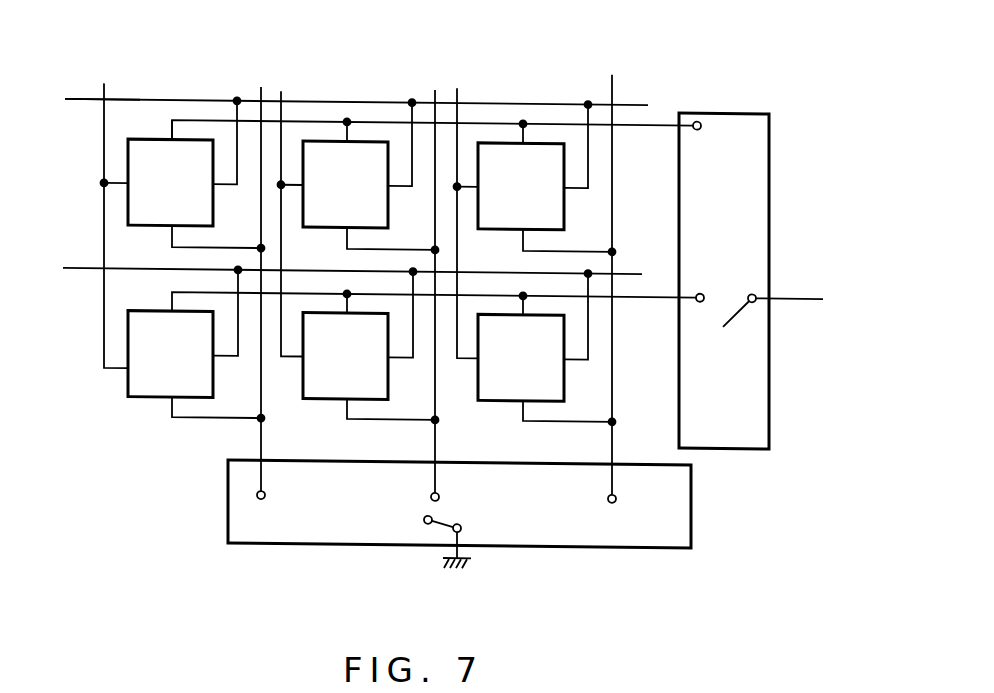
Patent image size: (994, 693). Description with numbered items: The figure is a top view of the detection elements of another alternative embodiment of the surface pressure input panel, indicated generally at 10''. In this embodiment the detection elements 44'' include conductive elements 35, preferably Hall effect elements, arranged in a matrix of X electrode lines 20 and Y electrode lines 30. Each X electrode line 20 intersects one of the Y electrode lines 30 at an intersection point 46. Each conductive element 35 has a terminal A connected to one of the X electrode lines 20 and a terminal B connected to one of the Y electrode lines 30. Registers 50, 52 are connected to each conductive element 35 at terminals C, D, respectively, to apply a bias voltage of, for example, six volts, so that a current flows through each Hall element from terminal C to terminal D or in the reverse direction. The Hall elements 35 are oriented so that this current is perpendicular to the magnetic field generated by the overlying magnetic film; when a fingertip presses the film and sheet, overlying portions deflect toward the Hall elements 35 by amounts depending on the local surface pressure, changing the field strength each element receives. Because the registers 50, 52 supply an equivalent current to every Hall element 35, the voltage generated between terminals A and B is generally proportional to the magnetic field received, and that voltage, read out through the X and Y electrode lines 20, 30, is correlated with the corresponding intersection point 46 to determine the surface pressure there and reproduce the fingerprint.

The Hall element array assembly 10'' is at (443, 307).
The X electrode line 20 is at (104, 351).
The Y electrode line 30 is at (546, 100).
The conductive element 35 is at (128, 159).
The detection element 44'' is at (436, 95).
The intersection point 46 is at (100, 100).
The register 50 is at (297, 546).
The register 52 is at (769, 405).
The terminal A is at (102, 187).
The terminal B is at (238, 100).
The terminal C is at (170, 233).
The terminal D is at (170, 140).